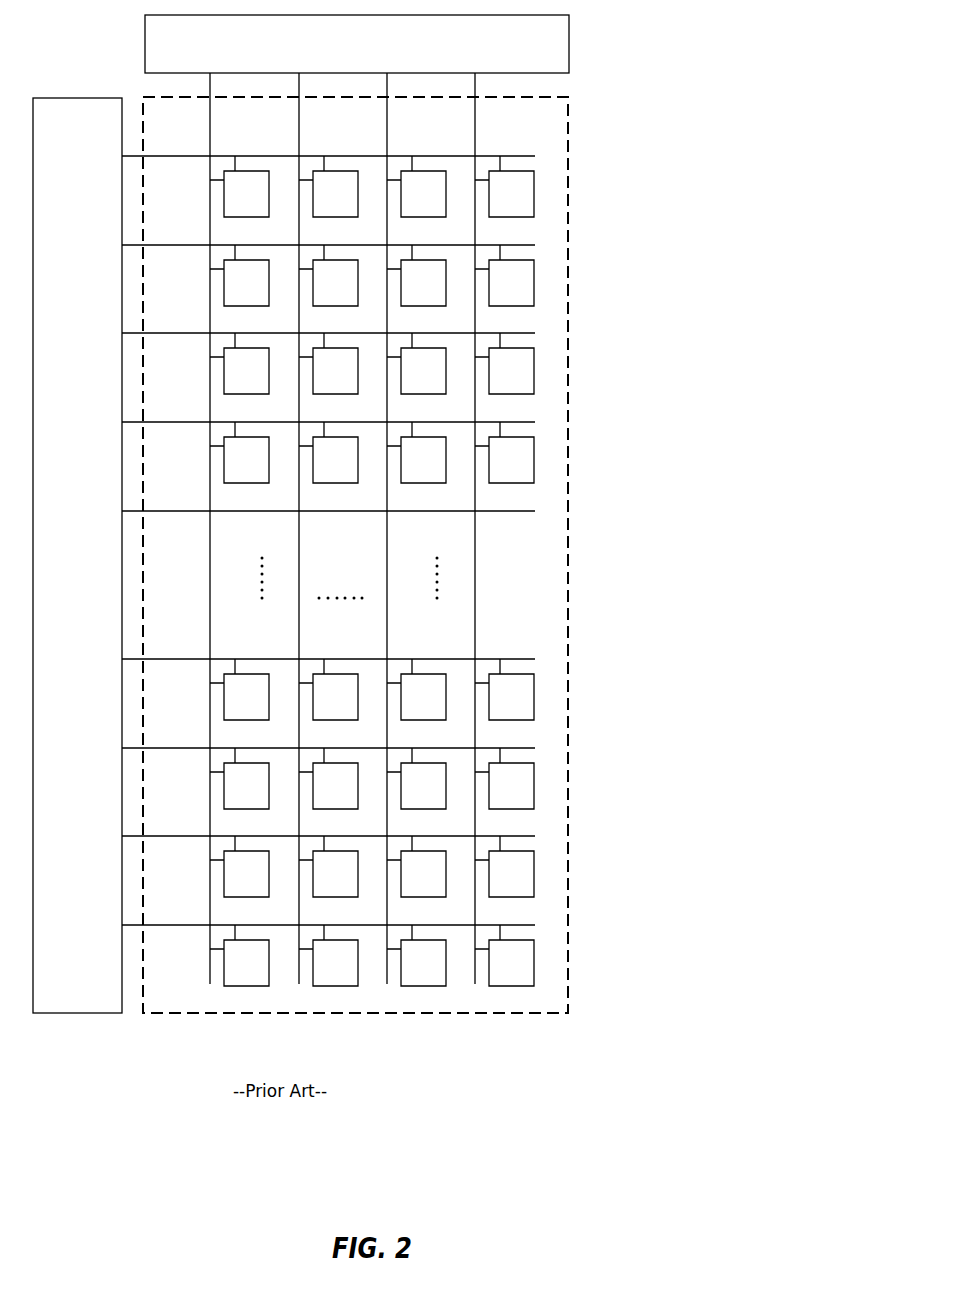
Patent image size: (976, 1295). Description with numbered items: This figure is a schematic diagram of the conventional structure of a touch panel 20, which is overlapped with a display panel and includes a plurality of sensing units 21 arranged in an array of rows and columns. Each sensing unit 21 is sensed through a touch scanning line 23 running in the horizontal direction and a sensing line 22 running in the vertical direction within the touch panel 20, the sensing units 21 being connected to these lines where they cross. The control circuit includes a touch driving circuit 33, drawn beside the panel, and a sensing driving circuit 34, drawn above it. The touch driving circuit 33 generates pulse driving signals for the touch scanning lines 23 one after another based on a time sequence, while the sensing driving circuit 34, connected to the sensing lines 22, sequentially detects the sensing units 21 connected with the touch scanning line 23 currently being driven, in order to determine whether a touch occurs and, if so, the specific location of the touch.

The touch panel 20 is at (568, 142).
The sensing unit 21 is at (522, 192).
The sensing line 22 is at (475, 113).
The touch scanning line 23 is at (525, 333).
The touch driving circuit 33 is at (76, 98).
The sensing driving circuit 34 is at (569, 52).